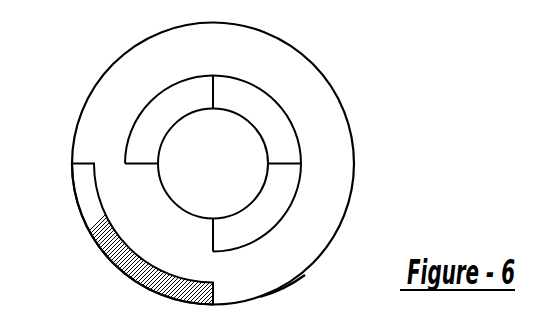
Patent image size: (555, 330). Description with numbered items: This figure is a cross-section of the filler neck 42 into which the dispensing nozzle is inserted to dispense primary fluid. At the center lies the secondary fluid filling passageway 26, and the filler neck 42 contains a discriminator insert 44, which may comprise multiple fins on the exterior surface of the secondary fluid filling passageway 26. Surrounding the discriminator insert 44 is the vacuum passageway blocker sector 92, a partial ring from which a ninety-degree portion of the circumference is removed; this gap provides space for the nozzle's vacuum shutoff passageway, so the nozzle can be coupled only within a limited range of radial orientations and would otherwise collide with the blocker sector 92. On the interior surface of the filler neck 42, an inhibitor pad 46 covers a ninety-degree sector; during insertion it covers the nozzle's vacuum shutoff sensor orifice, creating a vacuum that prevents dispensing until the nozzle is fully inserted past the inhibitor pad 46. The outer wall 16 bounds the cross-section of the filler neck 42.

The rotor body 16 is at (127, 73).
The vacuum passageway blocker sector 92 is at (270, 95).
The discriminator insert 44 is at (288, 160).
The secondary fluid filling passageway 26 is at (245, 172).
The inhibitor pad 46 is at (138, 275).
The filler neck 42 is at (283, 285).